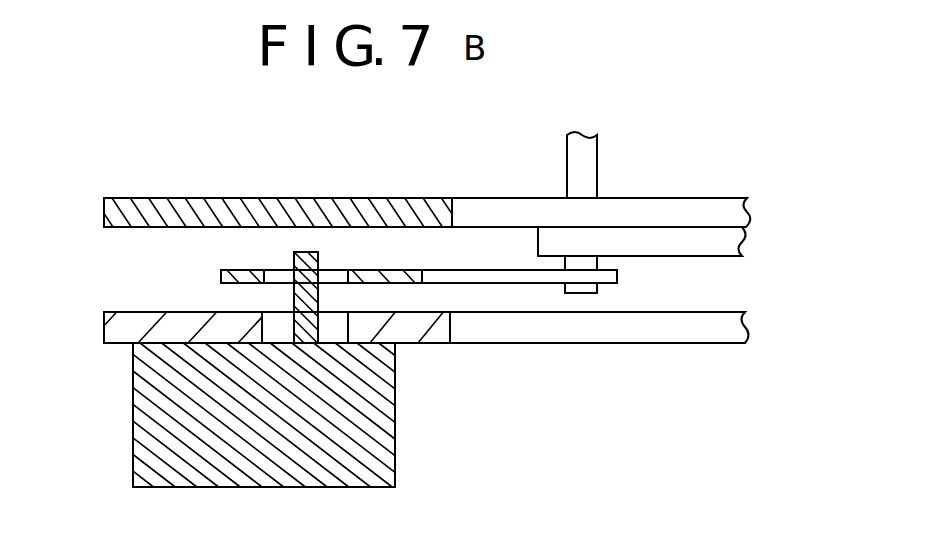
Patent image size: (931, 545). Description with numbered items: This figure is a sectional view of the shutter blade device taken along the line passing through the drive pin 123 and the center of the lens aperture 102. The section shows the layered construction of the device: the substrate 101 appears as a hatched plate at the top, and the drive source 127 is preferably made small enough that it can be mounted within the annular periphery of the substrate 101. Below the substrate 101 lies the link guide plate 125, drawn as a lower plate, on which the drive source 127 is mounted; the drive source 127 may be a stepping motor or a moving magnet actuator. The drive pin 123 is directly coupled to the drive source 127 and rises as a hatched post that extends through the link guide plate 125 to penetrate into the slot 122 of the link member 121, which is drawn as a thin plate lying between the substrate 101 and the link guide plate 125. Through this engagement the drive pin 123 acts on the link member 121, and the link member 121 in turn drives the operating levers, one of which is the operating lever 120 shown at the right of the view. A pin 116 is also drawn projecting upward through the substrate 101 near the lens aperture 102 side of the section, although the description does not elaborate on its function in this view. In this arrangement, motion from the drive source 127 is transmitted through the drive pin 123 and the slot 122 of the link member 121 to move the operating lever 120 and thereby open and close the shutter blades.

The substrate 101 is at (186, 208).
The lens aperture 102 is at (658, 212).
The pin 116 is at (585, 156).
The operating lever 120 is at (715, 244).
The link member 121 is at (501, 277).
The slot 122 is at (340, 270).
The drive pin 123 is at (311, 256).
The link guide plate 125 is at (660, 337).
The drive source 127 is at (373, 448).